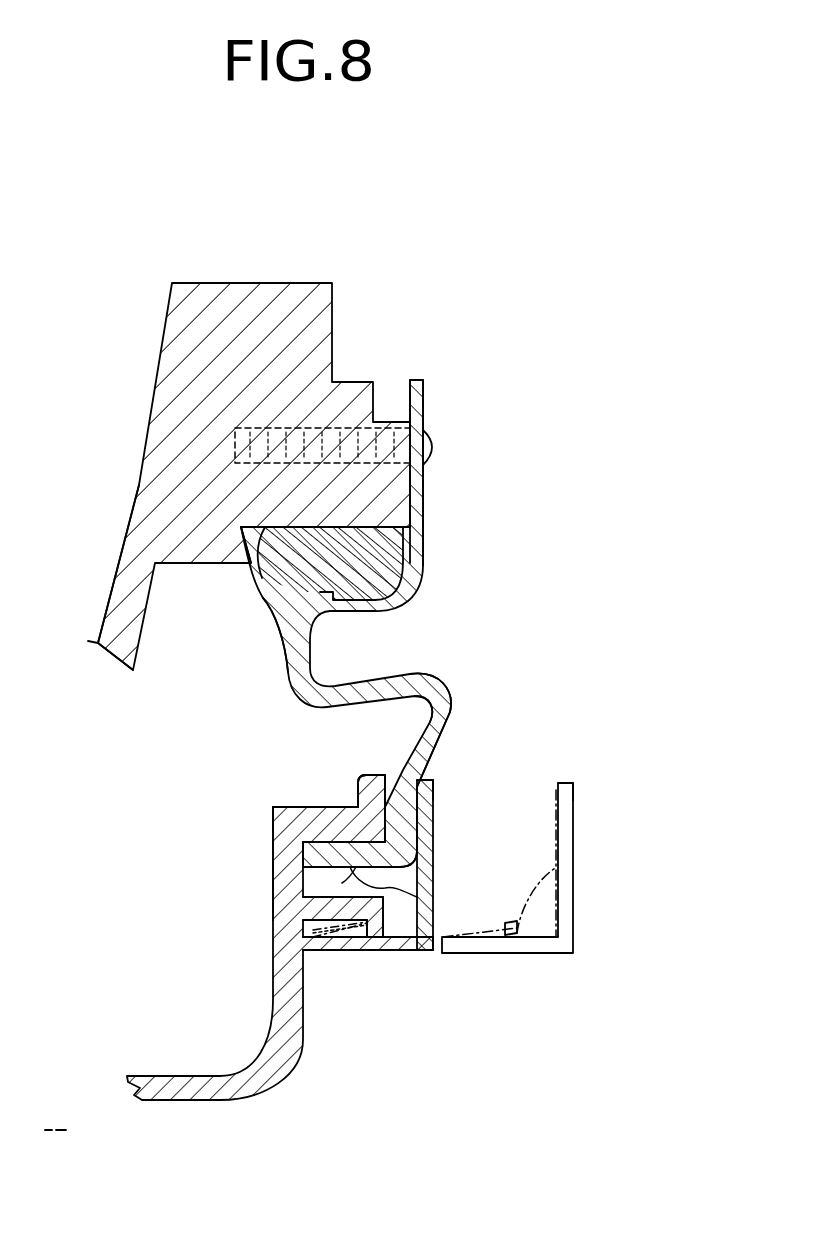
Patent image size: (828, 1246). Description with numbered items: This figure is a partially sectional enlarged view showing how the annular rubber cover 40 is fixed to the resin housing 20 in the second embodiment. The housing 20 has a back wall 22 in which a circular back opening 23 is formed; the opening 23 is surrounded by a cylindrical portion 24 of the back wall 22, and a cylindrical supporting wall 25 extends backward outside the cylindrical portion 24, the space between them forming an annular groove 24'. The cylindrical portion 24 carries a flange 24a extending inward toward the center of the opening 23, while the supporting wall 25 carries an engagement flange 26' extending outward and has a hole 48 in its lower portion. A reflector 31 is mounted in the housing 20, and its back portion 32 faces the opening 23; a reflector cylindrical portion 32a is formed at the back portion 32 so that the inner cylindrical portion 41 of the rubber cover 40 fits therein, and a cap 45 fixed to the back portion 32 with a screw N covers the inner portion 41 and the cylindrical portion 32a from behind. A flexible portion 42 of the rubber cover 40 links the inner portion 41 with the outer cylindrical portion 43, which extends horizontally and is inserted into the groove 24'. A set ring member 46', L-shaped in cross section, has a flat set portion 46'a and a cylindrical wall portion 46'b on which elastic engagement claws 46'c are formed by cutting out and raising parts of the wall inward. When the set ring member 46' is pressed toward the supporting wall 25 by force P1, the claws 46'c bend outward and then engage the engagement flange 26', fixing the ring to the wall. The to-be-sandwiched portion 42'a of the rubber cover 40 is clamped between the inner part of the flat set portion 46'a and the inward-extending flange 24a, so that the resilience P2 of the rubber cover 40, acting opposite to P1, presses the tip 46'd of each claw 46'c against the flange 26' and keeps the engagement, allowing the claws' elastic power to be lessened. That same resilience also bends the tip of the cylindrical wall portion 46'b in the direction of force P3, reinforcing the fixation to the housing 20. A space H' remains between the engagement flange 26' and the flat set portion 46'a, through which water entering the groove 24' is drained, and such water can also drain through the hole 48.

The resin housing 20 is at (311, 1049).
The back wall 22 is at (288, 910).
The circular back opening 23 is at (300, 723).
The cylindrical portion 24 is at (312, 800).
The annular groove 24' is at (206, 833).
The flange 24a is at (378, 772).
The cylindrical supporting wall 25 is at (403, 878).
The engagement flange 26' is at (393, 976).
The reflector 31 is at (105, 612).
The reflector back portion 32 is at (238, 283).
The reflector cylindrical portion 32a is at (240, 580).
The annular rubber cover 40 is at (322, 650).
The inner cylindrical portion 41 is at (393, 553).
The flexible portion 42 is at (456, 727).
The to-be-sandwiched portion 42'a is at (410, 802).
The outer cylindrical portion 43 is at (355, 878).
The cap 45 is at (430, 445).
The set ring member 46' is at (526, 866).
The flat set portion 46'a is at (532, 866).
The cylindrical wall portion 46'b is at (456, 970).
The engagement claw 46'c is at (425, 977).
The tip of engagement claw 46'd is at (584, 893).
The hole 48 is at (270, 890).
The screw N is at (437, 466).
The space H' is at (422, 861).
The pressing force P1 is at (595, 899).
The resilience force P2 is at (448, 812).
The bending force direction P3 is at (317, 977).